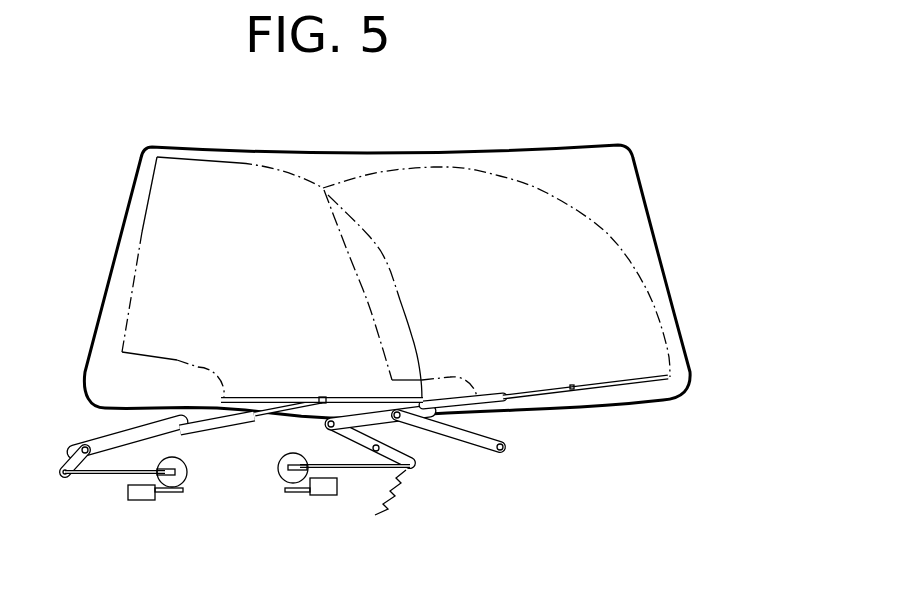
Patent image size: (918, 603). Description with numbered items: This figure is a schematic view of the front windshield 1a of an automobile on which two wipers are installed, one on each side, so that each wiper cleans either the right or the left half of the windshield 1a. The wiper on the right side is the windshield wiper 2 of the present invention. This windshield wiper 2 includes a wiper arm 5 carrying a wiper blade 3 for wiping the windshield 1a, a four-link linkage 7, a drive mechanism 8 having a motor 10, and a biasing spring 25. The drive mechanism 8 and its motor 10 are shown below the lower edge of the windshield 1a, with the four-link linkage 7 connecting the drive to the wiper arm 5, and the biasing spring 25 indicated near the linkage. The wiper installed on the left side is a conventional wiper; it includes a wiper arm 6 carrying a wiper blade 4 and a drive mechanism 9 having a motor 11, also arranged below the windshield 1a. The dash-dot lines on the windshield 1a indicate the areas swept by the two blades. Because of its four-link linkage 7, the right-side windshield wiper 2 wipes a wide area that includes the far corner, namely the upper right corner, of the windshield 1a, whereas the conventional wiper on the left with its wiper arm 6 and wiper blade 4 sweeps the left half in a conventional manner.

The front windshield 1a is at (646, 191).
The windshield wiper 2 is at (518, 447).
The wiper blade 3 is at (603, 380).
The wiper blade 4 is at (343, 397).
The wiper arm 5 is at (478, 397).
The wiper arm 6 is at (196, 422).
The four-link linkage 7 is at (395, 442).
The drive mechanism 8 is at (274, 479).
The drive mechanism 9 is at (189, 485).
The motor 10 is at (323, 497).
The motor 11 is at (137, 502).
The biasing spring 25 is at (387, 492).